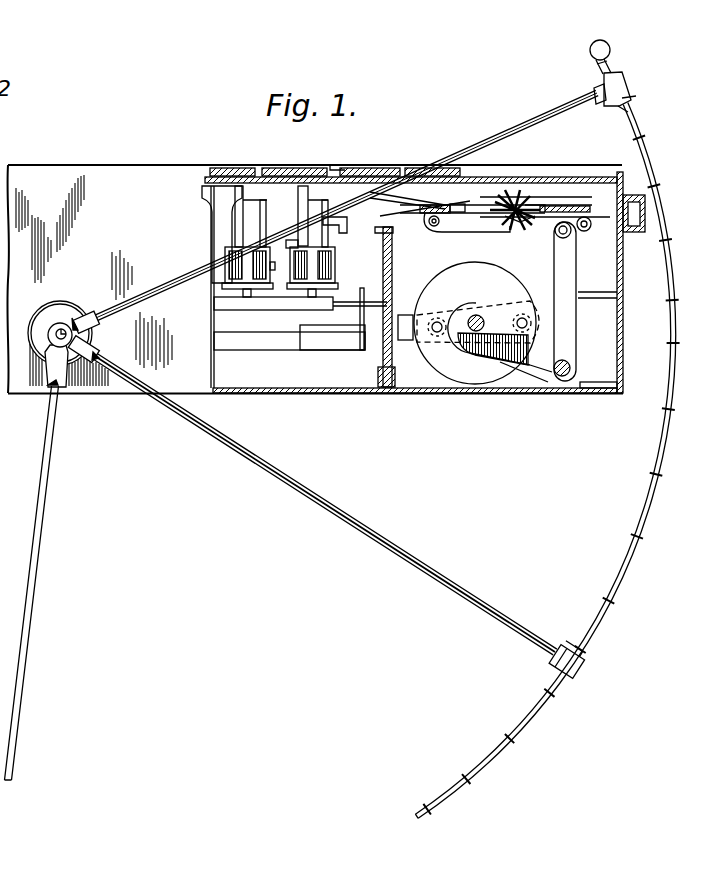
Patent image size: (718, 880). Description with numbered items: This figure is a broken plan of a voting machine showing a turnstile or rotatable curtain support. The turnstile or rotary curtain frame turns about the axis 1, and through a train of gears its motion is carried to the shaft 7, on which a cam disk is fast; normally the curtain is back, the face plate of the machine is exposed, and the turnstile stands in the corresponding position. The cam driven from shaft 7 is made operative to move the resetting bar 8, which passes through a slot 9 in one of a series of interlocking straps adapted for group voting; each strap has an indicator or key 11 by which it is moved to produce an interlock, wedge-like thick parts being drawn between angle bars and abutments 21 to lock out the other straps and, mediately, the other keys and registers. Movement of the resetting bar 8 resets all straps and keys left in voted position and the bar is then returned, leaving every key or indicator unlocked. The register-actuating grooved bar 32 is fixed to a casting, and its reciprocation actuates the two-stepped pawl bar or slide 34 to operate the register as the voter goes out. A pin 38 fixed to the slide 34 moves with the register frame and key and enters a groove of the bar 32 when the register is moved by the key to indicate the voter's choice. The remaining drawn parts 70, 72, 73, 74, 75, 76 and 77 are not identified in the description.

The axis of turnstile 1 is at (66, 324).
The shaft 7 is at (475, 317).
The resetting bar 8 is at (425, 215).
The slot 9 is at (453, 212).
The indicator or key 11 is at (333, 168).
The abutments 21 is at (513, 222).
The register-actuating grooved bar 32 is at (233, 221).
The two-stepped pawl bar or slide 34 is at (200, 279).
The pin 38 is at (263, 228).
The arm 70 is at (418, 168).
The contact springs 72 is at (525, 202).
The contact 73 is at (528, 222).
The pivot 74 is at (556, 232).
The lever 75 is at (577, 286).
The pin 76 is at (556, 381).
The crank 77 is at (545, 372).